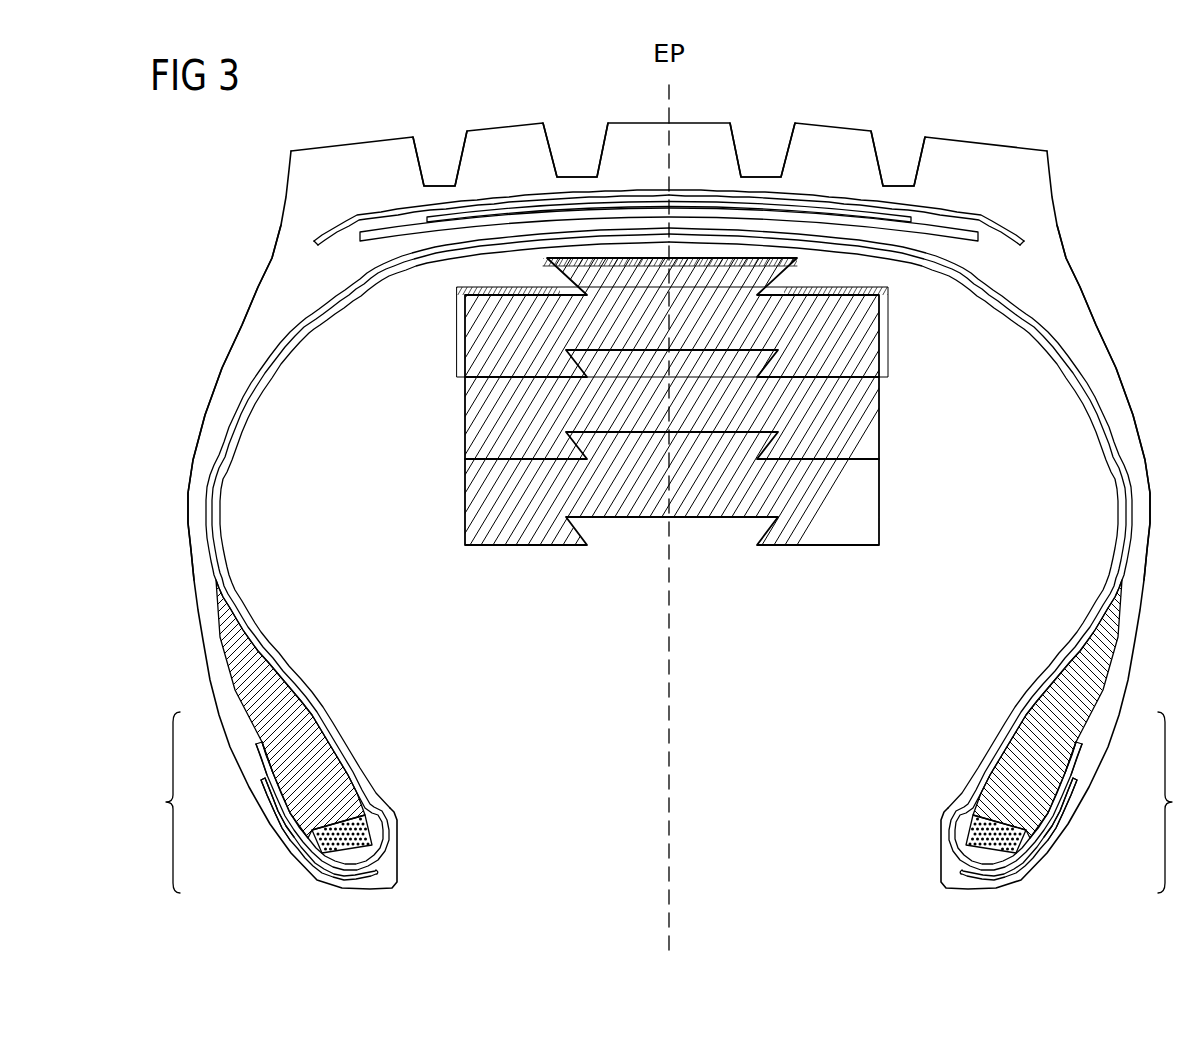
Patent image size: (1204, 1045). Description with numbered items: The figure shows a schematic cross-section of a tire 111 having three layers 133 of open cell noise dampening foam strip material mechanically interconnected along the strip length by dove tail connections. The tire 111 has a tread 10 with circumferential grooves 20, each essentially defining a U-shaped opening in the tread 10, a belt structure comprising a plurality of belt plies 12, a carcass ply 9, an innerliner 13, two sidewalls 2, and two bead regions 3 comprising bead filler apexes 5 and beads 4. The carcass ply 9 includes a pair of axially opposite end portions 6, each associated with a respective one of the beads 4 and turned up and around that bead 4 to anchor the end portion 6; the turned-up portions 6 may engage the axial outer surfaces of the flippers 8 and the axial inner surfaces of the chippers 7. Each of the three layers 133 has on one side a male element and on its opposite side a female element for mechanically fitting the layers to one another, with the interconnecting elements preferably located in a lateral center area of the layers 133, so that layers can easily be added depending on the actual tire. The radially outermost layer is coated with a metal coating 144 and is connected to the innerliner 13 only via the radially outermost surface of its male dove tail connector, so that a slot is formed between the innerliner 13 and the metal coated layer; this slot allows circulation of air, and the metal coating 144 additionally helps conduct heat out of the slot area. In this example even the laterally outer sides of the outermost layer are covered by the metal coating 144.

The tire 111 is at (234, 218).
The tread 10 is at (1032, 180).
The circumferential grooves 20 is at (895, 125).
The sidewalls 2 is at (1116, 372).
The bead regions 3 is at (668, 802).
The beads 4 is at (976, 830).
The bead filler apexes 5 is at (1043, 725).
The axially opposite end portions of the carcass ply 6 is at (1080, 742).
The chippers 7 is at (1074, 780).
The flippers 8 is at (1055, 832).
The carcass ply 9 is at (278, 364).
The belt plies 12 is at (602, 193).
The innerliner 13 is at (1016, 318).
The layers of open cell noise dampening foam strip material 133 is at (462, 500).
The metal coating 144 is at (456, 333).